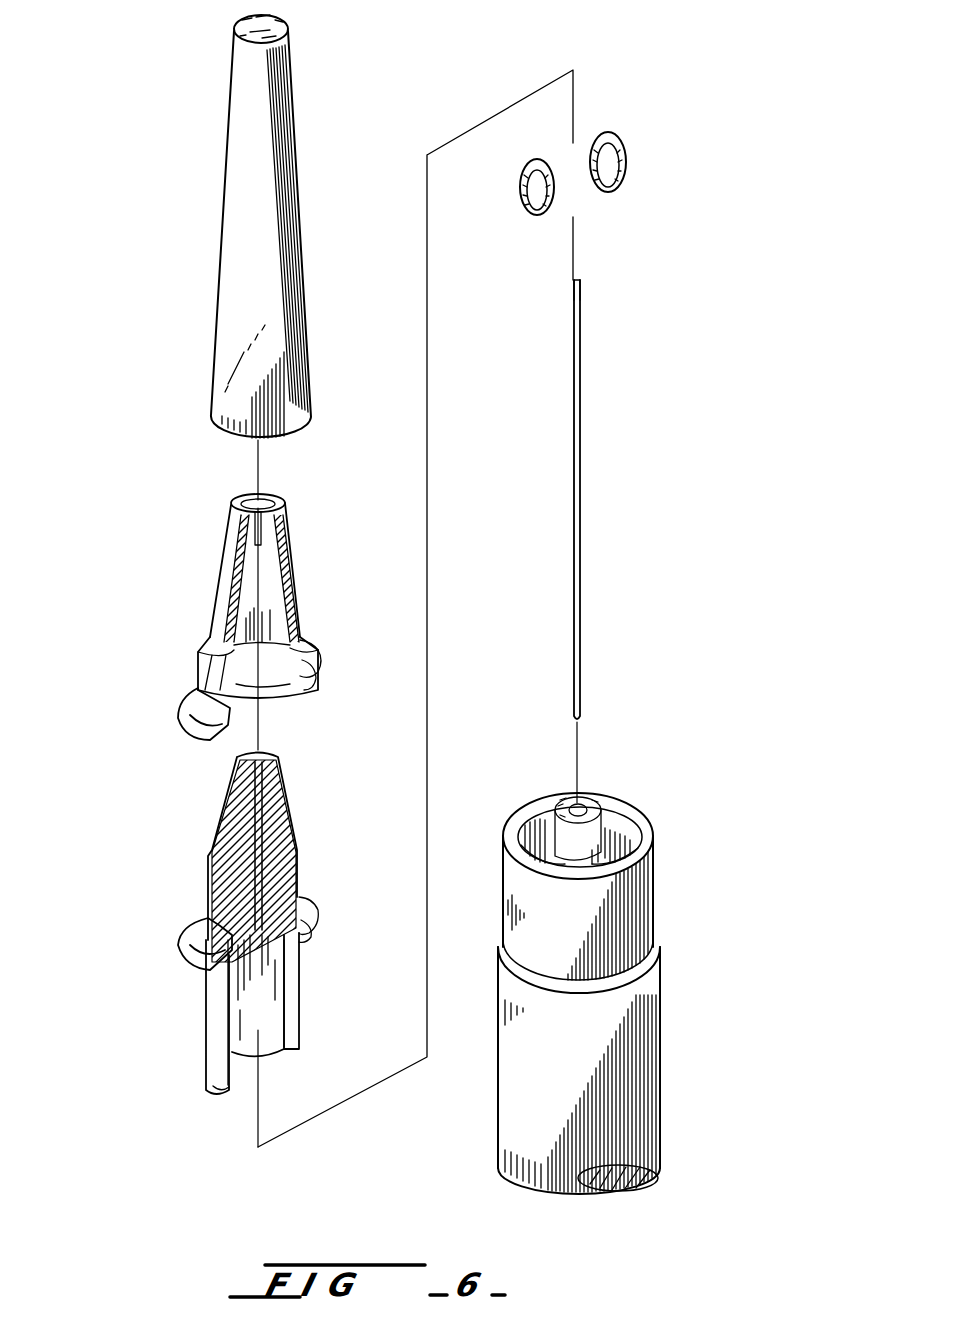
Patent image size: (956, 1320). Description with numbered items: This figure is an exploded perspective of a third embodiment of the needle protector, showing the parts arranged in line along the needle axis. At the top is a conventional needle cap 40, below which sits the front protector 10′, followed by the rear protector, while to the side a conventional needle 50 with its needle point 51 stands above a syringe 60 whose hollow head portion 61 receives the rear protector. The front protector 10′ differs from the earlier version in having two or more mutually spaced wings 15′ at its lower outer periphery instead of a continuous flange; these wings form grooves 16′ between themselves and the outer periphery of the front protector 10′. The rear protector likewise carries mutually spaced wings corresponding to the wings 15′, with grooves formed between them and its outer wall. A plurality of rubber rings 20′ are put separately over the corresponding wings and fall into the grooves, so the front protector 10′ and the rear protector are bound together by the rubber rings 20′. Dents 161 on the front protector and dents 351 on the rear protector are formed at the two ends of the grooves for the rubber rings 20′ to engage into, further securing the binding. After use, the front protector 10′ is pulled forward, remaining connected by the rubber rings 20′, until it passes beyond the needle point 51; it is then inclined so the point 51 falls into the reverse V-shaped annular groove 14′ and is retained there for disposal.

The needle cap 40 is at (300, 183).
The front protector 10′ is at (296, 553).
The reverse V-shaped annular groove 14′ is at (282, 516).
The grooves 16′ is at (306, 650).
The wings 15′ is at (318, 672).
The dents 161 is at (197, 697).
The dents 351 is at (200, 920).
The rubber rings 20′ is at (628, 150).
The needle 50 is at (583, 565).
The needle point 51 is at (577, 282).
The syringe 60 is at (659, 998).
The head portion 61 is at (650, 910).